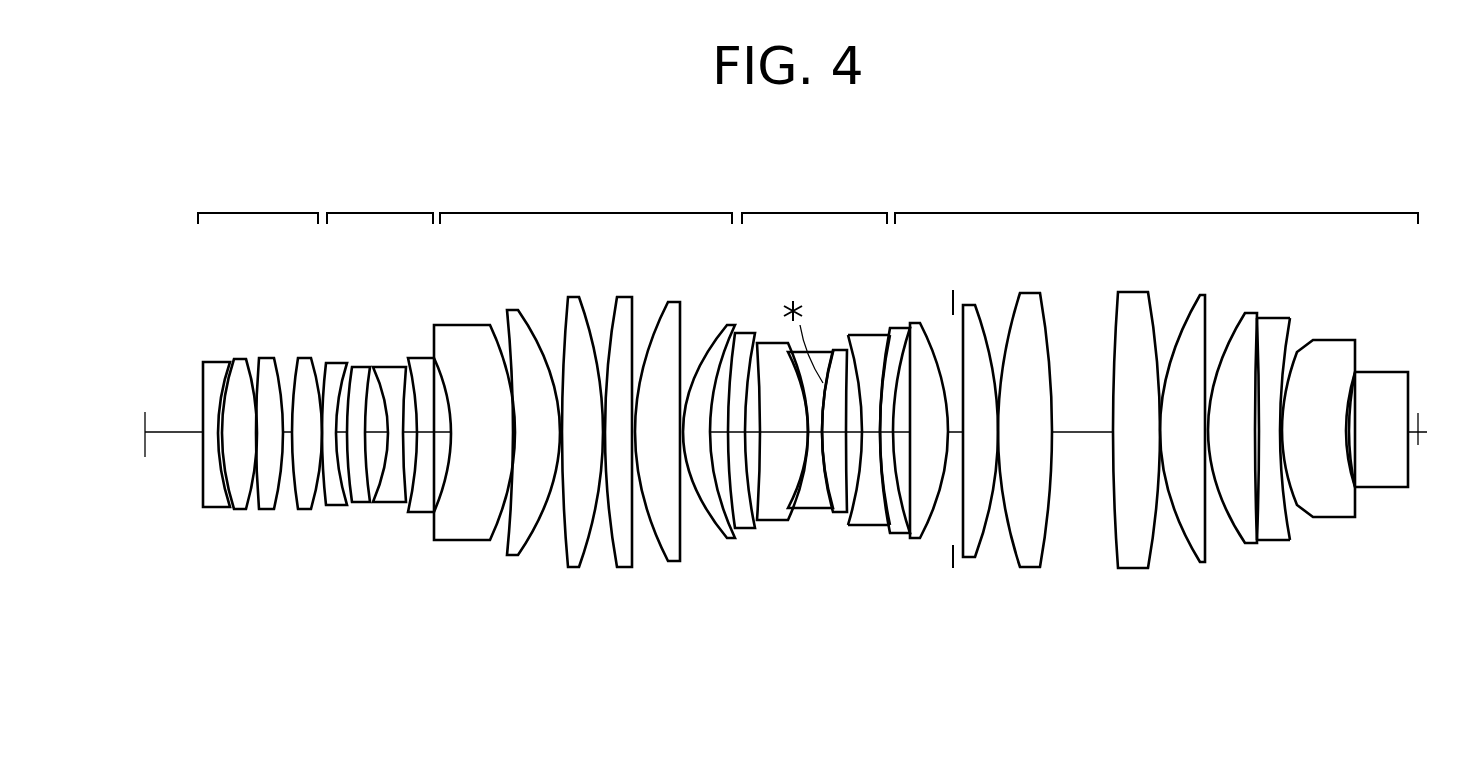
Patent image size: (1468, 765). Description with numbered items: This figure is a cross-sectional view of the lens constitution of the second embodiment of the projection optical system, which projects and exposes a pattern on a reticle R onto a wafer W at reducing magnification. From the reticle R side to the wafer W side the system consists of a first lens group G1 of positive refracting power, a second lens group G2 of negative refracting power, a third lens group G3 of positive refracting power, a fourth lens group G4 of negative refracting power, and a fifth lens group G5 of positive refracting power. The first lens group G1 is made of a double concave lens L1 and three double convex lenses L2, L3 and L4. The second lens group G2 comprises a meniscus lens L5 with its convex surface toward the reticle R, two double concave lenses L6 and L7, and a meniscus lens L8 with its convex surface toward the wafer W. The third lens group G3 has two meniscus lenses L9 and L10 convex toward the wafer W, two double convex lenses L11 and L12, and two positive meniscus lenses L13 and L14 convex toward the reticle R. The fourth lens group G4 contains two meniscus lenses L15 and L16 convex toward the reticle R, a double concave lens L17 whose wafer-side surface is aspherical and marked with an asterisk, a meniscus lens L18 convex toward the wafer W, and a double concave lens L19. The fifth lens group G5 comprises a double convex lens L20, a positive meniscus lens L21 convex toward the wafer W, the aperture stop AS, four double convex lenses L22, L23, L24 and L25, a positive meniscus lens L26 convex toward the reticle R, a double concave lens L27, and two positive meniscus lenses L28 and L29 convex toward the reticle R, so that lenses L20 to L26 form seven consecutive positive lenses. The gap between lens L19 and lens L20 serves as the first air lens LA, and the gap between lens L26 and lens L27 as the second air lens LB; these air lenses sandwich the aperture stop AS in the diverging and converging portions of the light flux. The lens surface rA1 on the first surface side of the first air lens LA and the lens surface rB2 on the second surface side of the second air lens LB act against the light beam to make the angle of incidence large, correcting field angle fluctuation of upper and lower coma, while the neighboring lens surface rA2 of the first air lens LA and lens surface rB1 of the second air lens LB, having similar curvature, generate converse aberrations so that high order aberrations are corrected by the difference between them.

The first lens group G1 is at (258, 199).
The second lens group G2 is at (380, 199).
The third lens group G3 is at (586, 199).
The fourth lens group G4 is at (814, 197).
The fifth lens group G5 is at (1156, 197).
The reticle R is at (147, 410).
The wafer W is at (1420, 412).
The aperture stop AS is at (955, 297).
The first air lens LA is at (858, 387).
The lens surface on the first surface side of the first air lens rA1 is at (879, 430).
The lens surface on the second surface side of the first air lens rA2 is at (906, 387).
The second air lens LB is at (1237, 392).
The lens surface on the first surface side of the second air lens rB1 is at (1257, 365).
The lens surface on the second surface side of the second air lens rB2 is at (1299, 392).
The double concave lens L1 is at (215, 510).
The double convex lens L2 is at (240, 512).
The double convex lens L3 is at (265, 512).
The double convex lens L4 is at (305, 512).
The meniscus lens L5 is at (333, 507).
The double concave lens L6 is at (360, 504).
The double concave lens L7 is at (388, 504).
The meniscus lens L8 is at (417, 513).
The meniscus lens L9 is at (465, 542).
The meniscus lens L10 is at (513, 556).
The double convex lens L11 is at (572, 568).
The double convex lens L12 is at (622, 568).
The positive meniscus lens L13 is at (673, 562).
The positive meniscus lens L14 is at (728, 539).
The meniscus lens L15 is at (745, 530).
The meniscus lens L16 is at (770, 522).
The double concave lens L17 is at (803, 509).
The meniscus lens L18 is at (842, 514).
The double concave lens L19 is at (858, 466).
The double convex lens L20 is at (900, 535).
The positive meniscus lens L21 is at (915, 540).
The double convex lens L22 is at (967, 557).
The double convex lens L23 is at (1033, 569).
The double convex lens L24 is at (1130, 570).
The double convex lens L25 is at (1203, 565).
The positive meniscus lens L26 is at (1250, 546).
The double concave lens L27 is at (1237, 427).
The positive meniscus lens L28 is at (1332, 519).
The positive meniscus lens L29 is at (1382, 489).